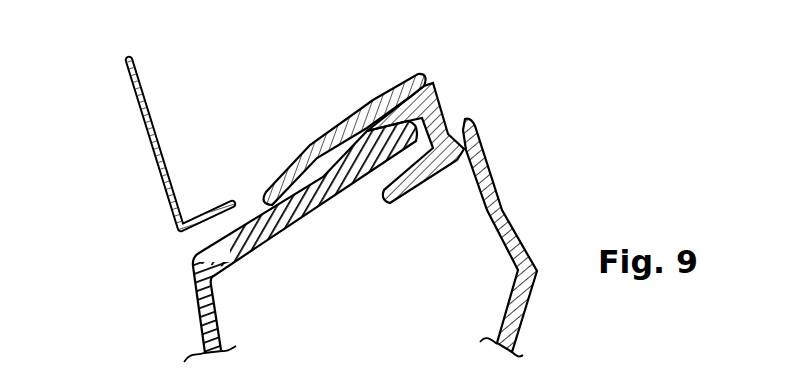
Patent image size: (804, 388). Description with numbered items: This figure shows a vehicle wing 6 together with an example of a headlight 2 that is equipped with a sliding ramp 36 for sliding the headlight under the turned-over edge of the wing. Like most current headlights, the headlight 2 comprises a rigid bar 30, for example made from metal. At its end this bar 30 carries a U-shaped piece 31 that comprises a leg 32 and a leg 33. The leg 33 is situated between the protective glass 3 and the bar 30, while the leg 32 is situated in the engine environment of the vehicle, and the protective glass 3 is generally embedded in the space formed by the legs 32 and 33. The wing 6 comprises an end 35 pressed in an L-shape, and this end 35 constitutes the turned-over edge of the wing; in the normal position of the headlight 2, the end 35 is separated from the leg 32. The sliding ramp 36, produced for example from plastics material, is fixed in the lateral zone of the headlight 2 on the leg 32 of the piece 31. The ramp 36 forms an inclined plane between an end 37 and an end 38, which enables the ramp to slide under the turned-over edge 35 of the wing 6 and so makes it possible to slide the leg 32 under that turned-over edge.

The headlight 2 is at (389, 197).
The protective glass 3 is at (320, 204).
The wing 6 is at (144, 142).
The rigid bar 30 is at (495, 196).
The U-shaped piece 31 is at (446, 114).
The leg 32 is at (443, 96).
The leg 33 is at (432, 173).
The end 35 is at (206, 211).
The sliding ramp 36 is at (379, 94).
The end 37 is at (271, 238).
The end 38 is at (428, 84).